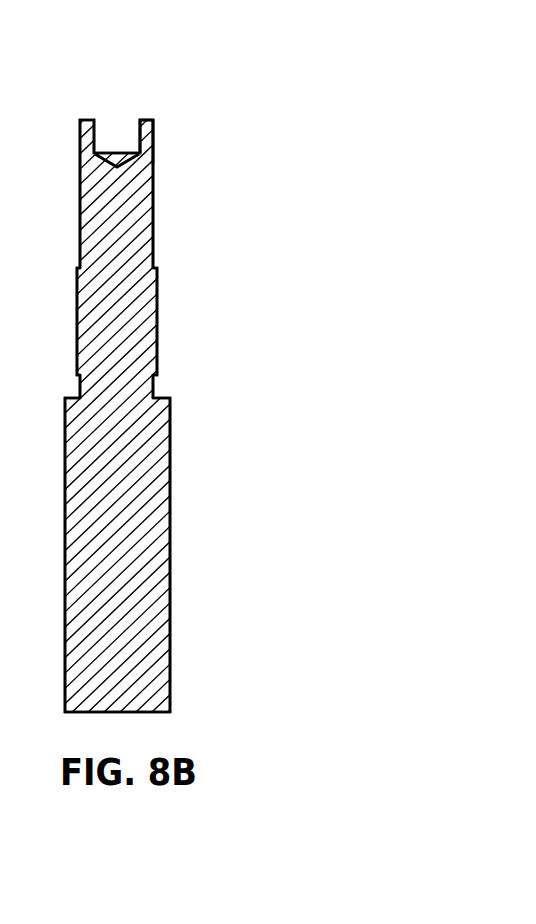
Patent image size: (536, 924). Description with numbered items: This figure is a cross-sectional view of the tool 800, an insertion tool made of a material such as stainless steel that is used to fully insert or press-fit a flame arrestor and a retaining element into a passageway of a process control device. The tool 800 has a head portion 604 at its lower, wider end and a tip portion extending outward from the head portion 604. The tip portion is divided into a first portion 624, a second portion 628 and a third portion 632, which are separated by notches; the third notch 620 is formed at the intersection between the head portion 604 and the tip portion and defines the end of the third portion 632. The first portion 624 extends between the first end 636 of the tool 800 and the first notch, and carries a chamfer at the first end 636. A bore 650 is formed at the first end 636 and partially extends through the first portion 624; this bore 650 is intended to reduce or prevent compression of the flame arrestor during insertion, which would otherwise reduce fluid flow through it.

The tool 800 is at (252, 122).
The head portion 604 is at (228, 545).
The third notch 620 is at (171, 459).
The first portion 624 is at (155, 207).
The second portion 628 is at (157, 303).
The third portion 632 is at (155, 388).
The first end 636 is at (148, 120).
The bore 650 is at (98, 137).